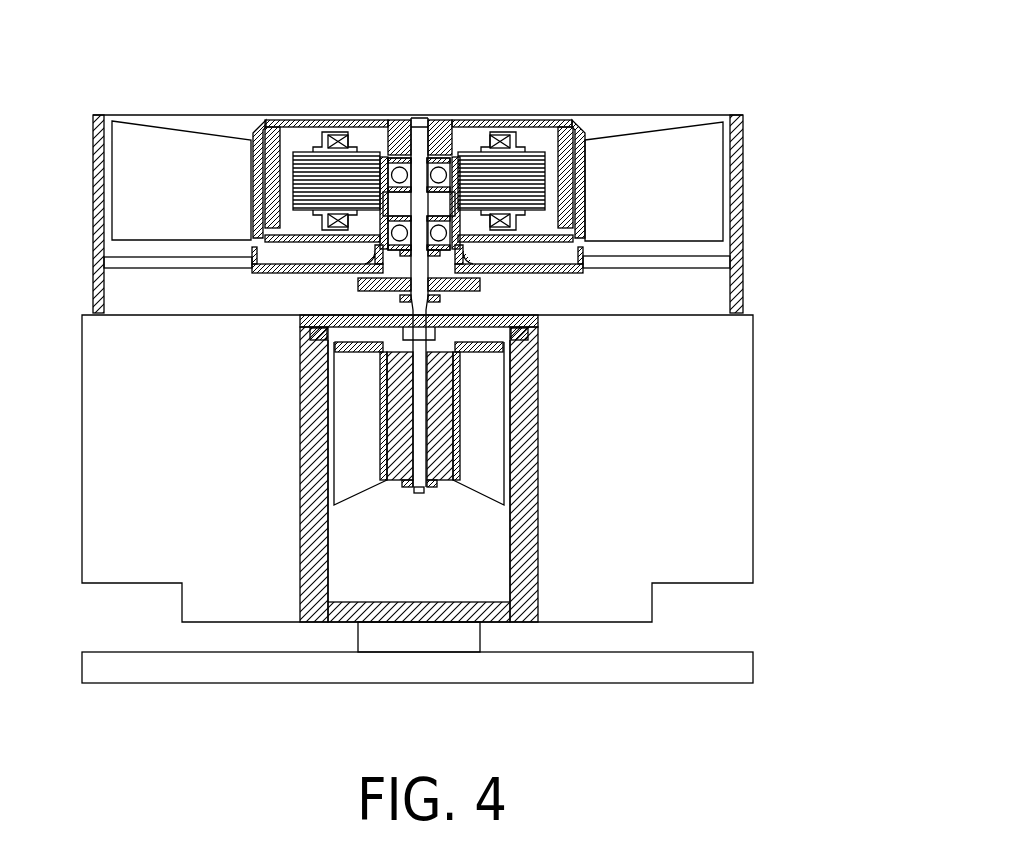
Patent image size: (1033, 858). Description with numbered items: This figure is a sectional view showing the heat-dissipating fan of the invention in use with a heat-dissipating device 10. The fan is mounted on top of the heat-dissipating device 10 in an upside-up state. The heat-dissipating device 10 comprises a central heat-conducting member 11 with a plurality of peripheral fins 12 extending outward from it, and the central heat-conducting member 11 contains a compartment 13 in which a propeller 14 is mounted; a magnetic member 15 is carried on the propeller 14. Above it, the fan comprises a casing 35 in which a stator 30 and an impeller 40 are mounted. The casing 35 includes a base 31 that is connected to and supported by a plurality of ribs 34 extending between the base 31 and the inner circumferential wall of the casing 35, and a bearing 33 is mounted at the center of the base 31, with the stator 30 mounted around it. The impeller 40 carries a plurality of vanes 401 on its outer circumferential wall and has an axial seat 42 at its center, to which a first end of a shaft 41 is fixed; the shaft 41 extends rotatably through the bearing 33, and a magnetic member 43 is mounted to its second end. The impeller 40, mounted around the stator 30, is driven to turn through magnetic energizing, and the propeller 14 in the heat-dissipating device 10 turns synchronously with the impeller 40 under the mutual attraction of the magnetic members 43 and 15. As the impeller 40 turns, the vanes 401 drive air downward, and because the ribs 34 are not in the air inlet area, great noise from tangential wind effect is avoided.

The heat-dissipating device 10 is at (777, 437).
The central heat-conducting member 11 is at (318, 533).
The peripheral fins 12 is at (732, 530).
The compartment 13 is at (497, 562).
The propeller 14 is at (350, 448).
The magnetic member 15 is at (325, 340).
The stator 30 is at (300, 155).
The base 31 is at (307, 267).
The bearing 33 is at (450, 152).
The ribs 34 is at (175, 263).
The casing 35 is at (740, 187).
The impeller 40 is at (537, 120).
The vanes 401 is at (152, 152).
The shaft 41 is at (417, 142).
The axial seat 42 is at (373, 150).
The magnetic member 43 is at (478, 280).